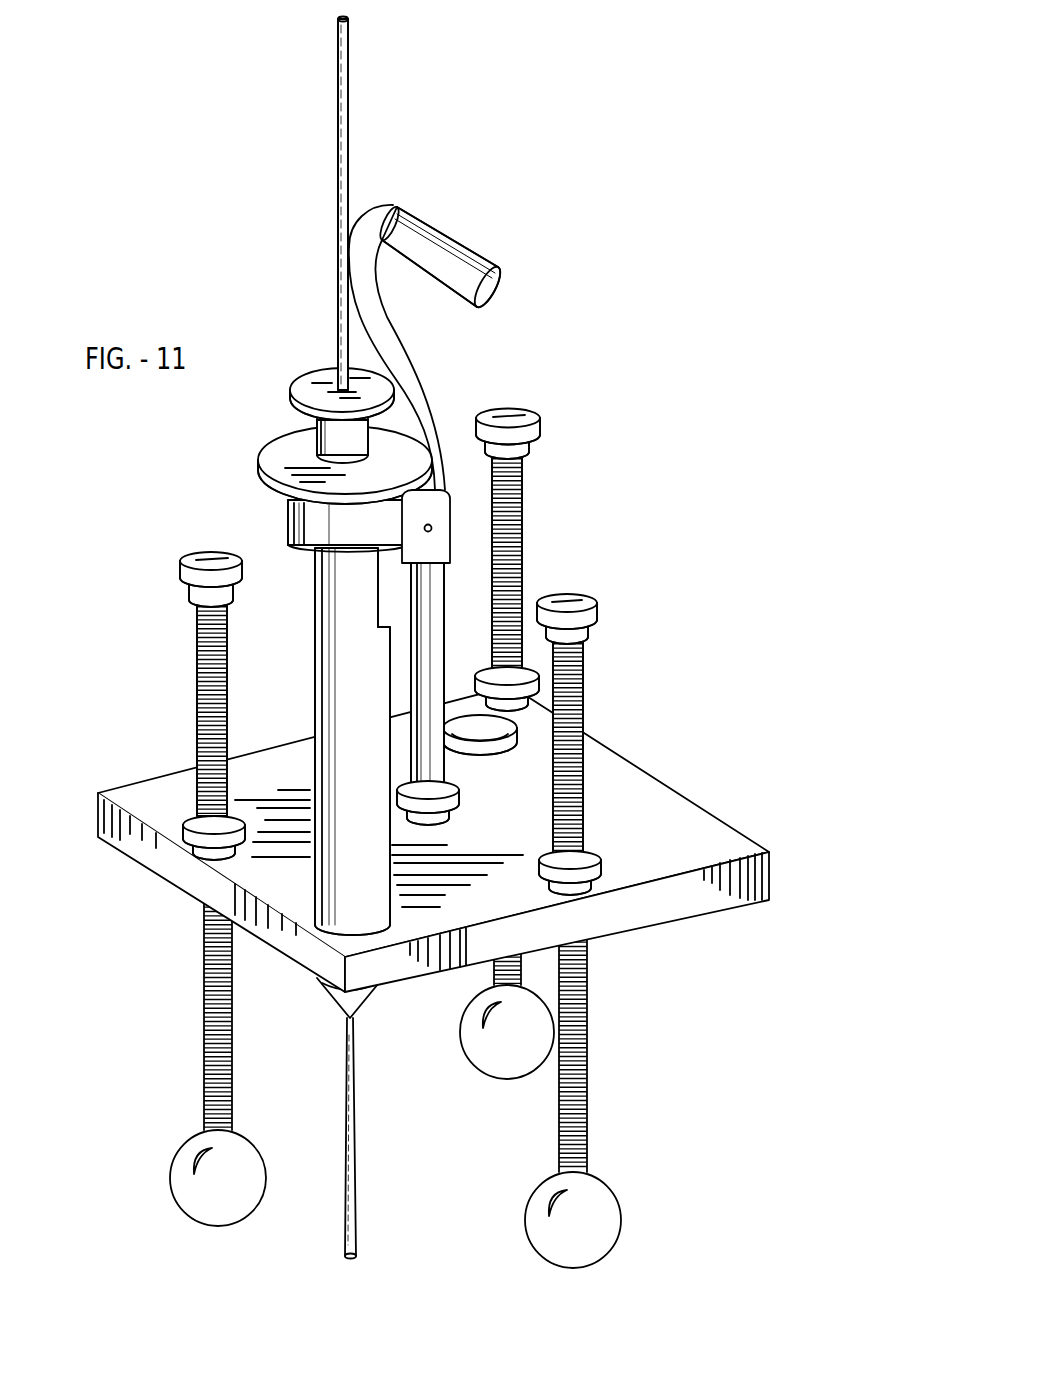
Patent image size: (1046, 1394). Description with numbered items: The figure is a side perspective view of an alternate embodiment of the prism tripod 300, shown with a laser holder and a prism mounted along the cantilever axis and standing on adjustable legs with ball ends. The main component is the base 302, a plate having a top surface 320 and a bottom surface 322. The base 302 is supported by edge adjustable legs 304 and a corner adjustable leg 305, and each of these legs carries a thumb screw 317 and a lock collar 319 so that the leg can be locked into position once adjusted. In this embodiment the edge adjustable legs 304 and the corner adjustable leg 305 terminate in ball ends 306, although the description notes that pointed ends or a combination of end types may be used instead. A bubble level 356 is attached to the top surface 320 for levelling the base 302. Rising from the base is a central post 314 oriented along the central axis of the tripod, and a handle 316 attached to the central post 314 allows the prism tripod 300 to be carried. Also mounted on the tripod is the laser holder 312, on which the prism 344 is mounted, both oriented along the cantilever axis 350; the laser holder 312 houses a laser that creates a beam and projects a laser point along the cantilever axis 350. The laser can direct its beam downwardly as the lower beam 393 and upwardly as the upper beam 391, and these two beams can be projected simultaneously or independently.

The prism tripod 300 is at (705, 350).
The base 302 is at (698, 838).
The edge adjustable legs 304 is at (205, 1045).
The corner adjustable leg 305 is at (525, 528).
The ball ends 306 is at (182, 1160).
The laser holder 312 is at (355, 697).
The central post 314 is at (432, 625).
The handle 316 is at (452, 254).
The thumb screws 317 is at (510, 420).
The lock collars 319 is at (607, 877).
The top surface 320 is at (758, 852).
The bottom surface 322 is at (723, 910).
The prism 344 is at (292, 505).
The cantilever axis 350 is at (339, 193).
The bubble level 356 is at (493, 730).
The upper beam 391 is at (338, 56).
The lower beam 393 is at (353, 1232).